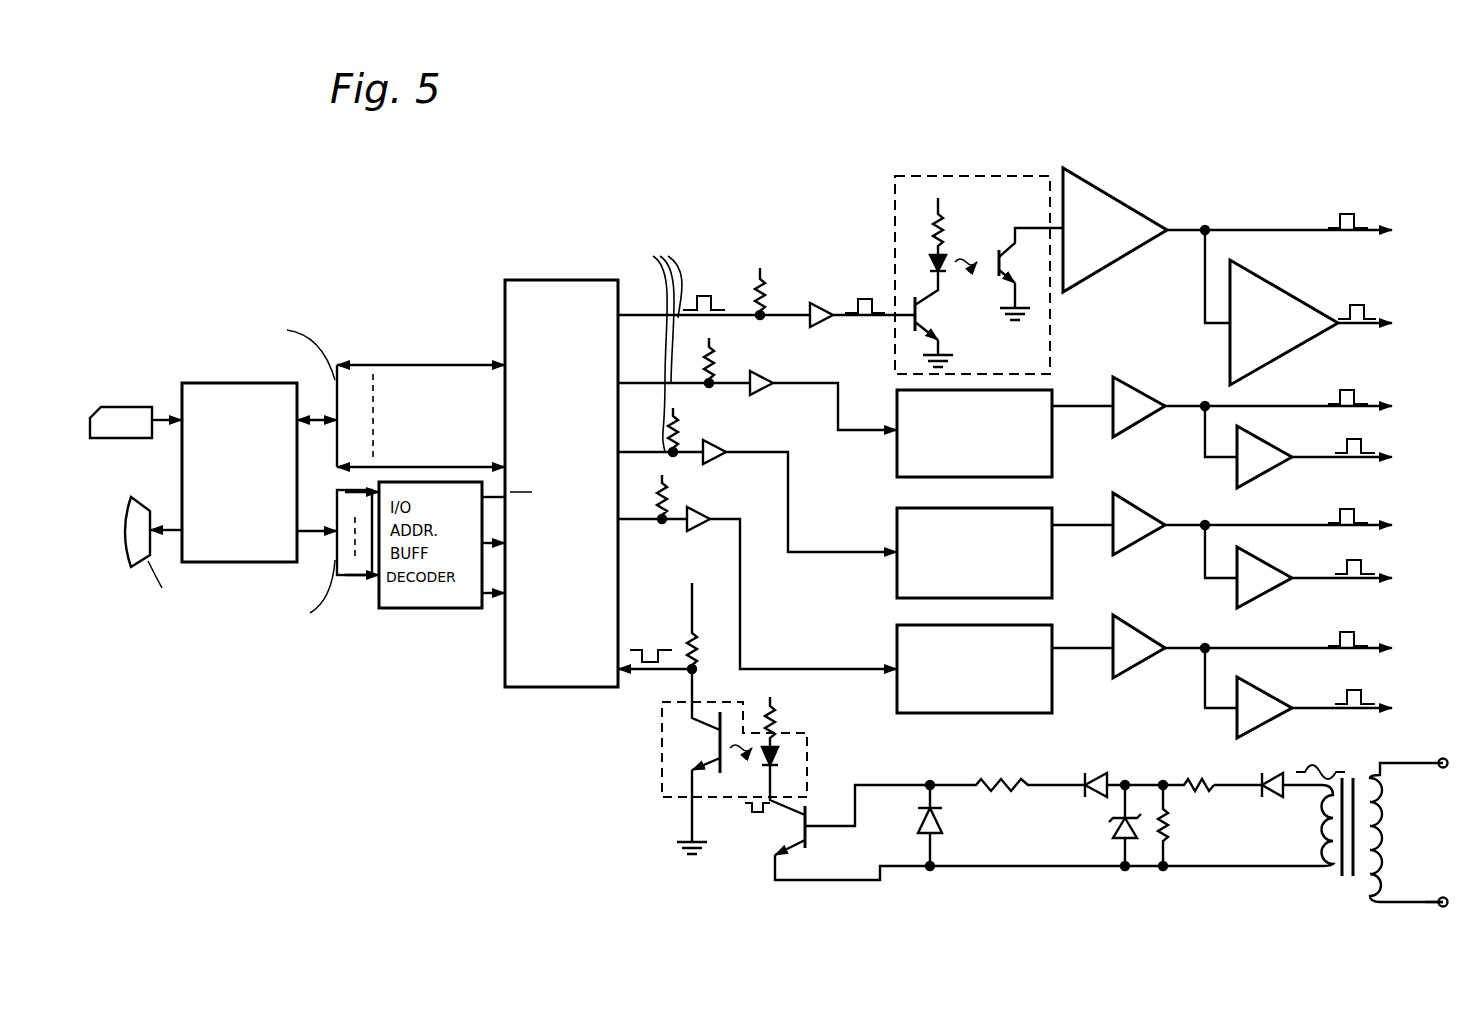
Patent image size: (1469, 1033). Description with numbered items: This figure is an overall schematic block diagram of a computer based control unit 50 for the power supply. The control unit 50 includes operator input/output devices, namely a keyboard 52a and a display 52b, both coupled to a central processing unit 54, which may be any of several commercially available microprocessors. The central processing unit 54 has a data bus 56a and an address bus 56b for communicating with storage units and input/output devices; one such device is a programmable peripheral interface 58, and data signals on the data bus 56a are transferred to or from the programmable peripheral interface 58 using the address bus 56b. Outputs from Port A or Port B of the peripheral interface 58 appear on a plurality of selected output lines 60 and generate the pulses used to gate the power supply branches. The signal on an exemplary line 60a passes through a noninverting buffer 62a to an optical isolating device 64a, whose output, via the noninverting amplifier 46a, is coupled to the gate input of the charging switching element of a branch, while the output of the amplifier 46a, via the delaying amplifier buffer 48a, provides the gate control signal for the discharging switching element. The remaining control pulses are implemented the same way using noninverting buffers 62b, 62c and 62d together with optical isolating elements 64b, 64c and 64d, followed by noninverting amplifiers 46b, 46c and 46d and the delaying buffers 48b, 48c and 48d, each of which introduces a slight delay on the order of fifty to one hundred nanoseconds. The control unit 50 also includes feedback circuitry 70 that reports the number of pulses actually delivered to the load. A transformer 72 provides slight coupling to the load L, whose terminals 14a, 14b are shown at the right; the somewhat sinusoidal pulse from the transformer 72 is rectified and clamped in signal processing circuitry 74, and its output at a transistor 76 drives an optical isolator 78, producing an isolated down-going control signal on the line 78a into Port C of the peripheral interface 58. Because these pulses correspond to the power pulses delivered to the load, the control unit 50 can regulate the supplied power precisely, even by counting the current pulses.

The computer based control unit 50 is at (450, 733).
The keyboard 52a is at (131, 405).
The display 52b is at (132, 513).
The central processing unit 54 is at (210, 393).
The data bus 56a is at (335, 398).
The address bus 56b is at (335, 540).
The programmable peripheral interface 58 is at (555, 292).
The selected output lines 60 is at (639, 597).
The exemplary output line 60a is at (733, 310).
The noninverting buffer 62a is at (812, 310).
The noninverting buffer 62b is at (763, 374).
The noninverting buffer 62c is at (715, 445).
The noninverting buffer 62d is at (693, 506).
The optical isolating device 64a is at (987, 183).
The optical isolating element 64b is at (1005, 433).
The optical isolating element 64c is at (1005, 553).
The optical isolating element 64d is at (1005, 669).
The noninverting amplifier 46a is at (1097, 192).
The noninverting amplifier 46b is at (1175, 358).
The noninverting amplifier 46c is at (1132, 513).
The noninverting amplifier 46d is at (1135, 637).
The noninverting buffer 48a is at (1298, 308).
The noninverting buffer 48b is at (1263, 467).
The noninverting buffer 48c is at (1265, 590).
The noninverting buffer 48d is at (1262, 718).
The feedback circuitry 70 is at (878, 893).
The transformer 72 is at (1343, 880).
The signal processing circuitry 74 is at (1105, 766).
The transistor 76 is at (783, 813).
The optical isolator 78 is at (713, 762).
The line 78a is at (658, 680).
The load terminal 14a is at (1405, 762).
The load terminal 14b is at (1412, 900).